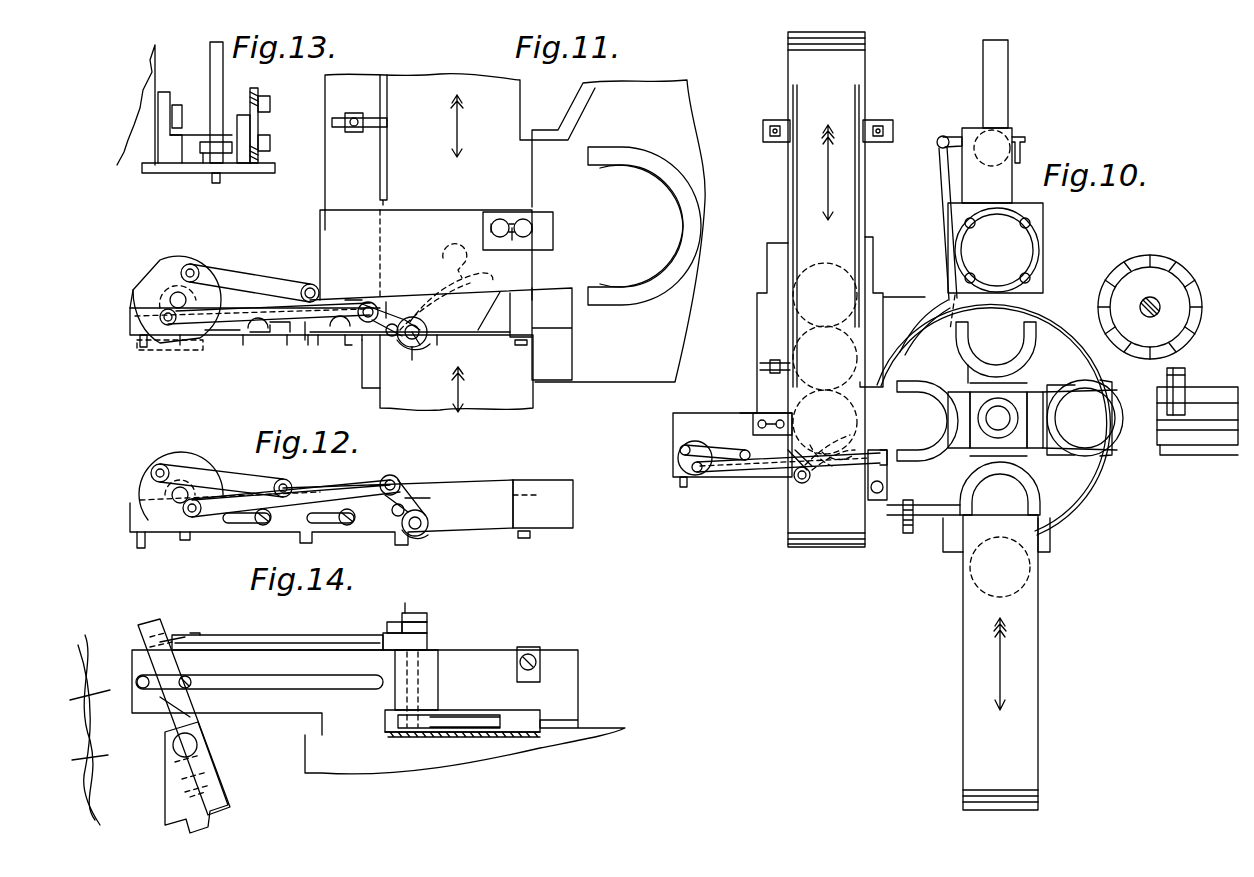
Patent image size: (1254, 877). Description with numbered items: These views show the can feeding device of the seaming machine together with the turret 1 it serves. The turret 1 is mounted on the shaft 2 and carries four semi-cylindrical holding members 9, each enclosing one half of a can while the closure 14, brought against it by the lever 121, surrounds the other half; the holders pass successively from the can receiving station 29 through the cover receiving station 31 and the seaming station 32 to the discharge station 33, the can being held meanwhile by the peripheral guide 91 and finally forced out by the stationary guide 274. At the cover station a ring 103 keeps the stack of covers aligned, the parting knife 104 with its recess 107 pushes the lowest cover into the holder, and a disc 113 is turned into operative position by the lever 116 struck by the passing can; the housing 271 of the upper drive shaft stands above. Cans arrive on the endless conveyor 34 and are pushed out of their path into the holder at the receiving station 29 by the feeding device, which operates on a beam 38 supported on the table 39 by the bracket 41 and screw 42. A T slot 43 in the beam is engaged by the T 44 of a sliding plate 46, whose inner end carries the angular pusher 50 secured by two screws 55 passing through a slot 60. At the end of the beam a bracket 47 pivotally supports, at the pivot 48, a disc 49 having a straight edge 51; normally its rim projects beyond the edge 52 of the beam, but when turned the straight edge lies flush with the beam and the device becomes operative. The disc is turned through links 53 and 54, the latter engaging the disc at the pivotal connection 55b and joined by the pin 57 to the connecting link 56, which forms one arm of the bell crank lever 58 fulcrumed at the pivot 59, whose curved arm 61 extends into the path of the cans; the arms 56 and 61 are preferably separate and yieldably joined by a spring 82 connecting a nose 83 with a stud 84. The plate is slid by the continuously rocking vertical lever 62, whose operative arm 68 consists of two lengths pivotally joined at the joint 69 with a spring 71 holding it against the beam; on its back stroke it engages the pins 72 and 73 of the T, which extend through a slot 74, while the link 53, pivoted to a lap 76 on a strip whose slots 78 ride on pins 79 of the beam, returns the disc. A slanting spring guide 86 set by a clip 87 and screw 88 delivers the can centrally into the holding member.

In FIG. 10, the turret 1 is at (1028, 388).
In FIG. 10, the shaft 2 is at (1000, 420).
In FIG. 11, the holding member 9 is at (662, 178).
In FIG. 10, the holding member 9 is at (985, 355).
In FIG. 10, the closure 14 is at (1122, 410).
In FIG. 10, the can receiving station 29 is at (918, 470).
In FIG. 10, the cover receiving station 31 is at (1045, 292).
In FIG. 10, the seaming station 32 is at (1090, 420).
In FIG. 10, the discharge station 33 is at (998, 518).
In FIG. 10, the endless conveyor 34 is at (800, 190).
In FIG. 13, the beam 38 is at (193, 136).
In FIG. 11, the beam 38 is at (438, 338).
In FIG. 13, the table 39 is at (128, 165).
In FIG. 13, the bracket 41 is at (163, 168).
In FIG. 13, the screw 42 is at (178, 105).
In FIG. 13, the T slot 43 is at (209, 153).
In FIG. 13, the T 44 is at (212, 152).
In FIG. 13, the plate 46 is at (223, 98).
In FIG. 11, the plate 46 is at (325, 232).
In FIG. 11, the bracket 47 is at (168, 297).
In FIG. 12, the bracket 47 is at (180, 491).
In FIG. 11, the pivot 48 is at (176, 297).
In FIG. 11, the disc 49 is at (160, 262).
In FIG. 12, the disc 49 is at (192, 455).
In FIG. 14, the disc 49 is at (175, 639).
In FIG. 10, the disc 49 is at (678, 460).
In FIG. 11, the angular pusher 50 is at (483, 242).
In FIG. 10, the angular pusher 50 is at (785, 415).
In FIG. 11, the straight edge 51 is at (134, 300).
In FIG. 11, the edge of the beam 52 is at (220, 330).
In FIG. 13, the link 53 is at (270, 100).
In FIG. 11, the link 53 is at (232, 278).
In FIG. 12, the link 53 is at (228, 483).
In FIG. 10, the link 53 is at (730, 452).
In FIG. 13, the link 54 is at (270, 143).
In FIG. 11, the link 54 is at (234, 322).
In FIG. 12, the link 54 is at (338, 490).
In FIG. 14, the link 54 is at (280, 637).
In FIG. 10, the link 54 is at (752, 462).
In FIG. 11, the screws 55 is at (521, 219).
In FIG. 11, the pivotal connection 55b is at (160, 320).
In FIG. 11, the connecting link 56 is at (388, 300).
In FIG. 12, the connecting link 56 is at (405, 490).
In FIG. 10, the connecting link 56 is at (821, 459).
In FIG. 11, the pin 57 is at (370, 302).
In FIG. 12, the pin 57 is at (392, 475).
In FIG. 11, the bell crank lever 58 is at (412, 360).
In FIG. 12, the bell crank lever 58 is at (410, 535).
In FIG. 11, the pivot 59 is at (428, 332).
In FIG. 12, the pivot 59 is at (418, 528).
In FIG. 14, the pivot 59 is at (420, 668).
In FIG. 11, the slot 60 is at (512, 240).
In FIG. 11, the curved arm 61 is at (455, 261).
In FIG. 14, the curved arm 61 is at (427, 616).
In FIG. 10, the curved arm 61 is at (832, 440).
In FIG. 13, the vertical lever 62 is at (254, 163).
In FIG. 11, the vertical lever 62 is at (347, 345).
In FIG. 14, the vertical lever 62 is at (190, 709).
In FIG. 14, the operative arm 68 is at (150, 625).
In FIG. 14, the pivot joint 69 is at (210, 767).
In FIG. 11, the spring 71 is at (305, 333).
In FIG. 14, the spring 71 is at (197, 747).
In FIG. 13, the pin 72 is at (220, 180).
In FIG. 11, the pin 72 is at (142, 347).
In FIG. 12, the pin 72 is at (137, 540).
In FIG. 14, the pin 72 is at (147, 679).
In FIG. 10, the pin 72 is at (684, 487).
In FIG. 11, the pin 73 is at (180, 347).
In FIG. 12, the pin 73 is at (184, 532).
In FIG. 14, the pin 73 is at (190, 680).
In FIG. 14, the slot 74 is at (272, 680).
In FIG. 11, the lap 76 is at (323, 304).
In FIG. 11, the slots 78 is at (286, 330).
In FIG. 12, the slots 78 is at (237, 522).
In FIG. 11, the pins 79 is at (260, 330).
In FIG. 12, the pins 79 is at (263, 525).
In FIG. 11, the spring 82 is at (394, 338).
In FIG. 12, the spring 82 is at (392, 511).
In FIG. 14, the spring 82 is at (414, 608).
In FIG. 11, the nose 83 is at (446, 301).
In FIG. 12, the nose 83 is at (404, 508).
In FIG. 11, the stud 84 is at (392, 305).
In FIG. 14, the stud 84 is at (392, 616).
In FIG. 11, the spring guide 86 is at (498, 295).
In FIG. 12, the spring guide 86 is at (565, 480).
In FIG. 11, the clip 87 is at (520, 314).
In FIG. 12, the clip 87 is at (530, 532).
In FIG. 14, the clip 87 is at (537, 648).
In FIG. 11, the screw 88 is at (520, 346).
In FIG. 10, the peripheral guide 91 is at (912, 322).
In FIG. 10, the ring 103 is at (1040, 240).
In FIG. 10, the parting knife 104 is at (1000, 97).
In FIG. 10, the recess 107 is at (958, 133).
In FIG. 10, the disc 113 is at (1008, 137).
In FIG. 10, the lever 116 is at (942, 175).
In FIG. 10, the lever 121 is at (1185, 375).
In FIG. 10, the housing 271 is at (1020, 605).
In FIG. 10, the stationary guide 274 is at (1005, 425).